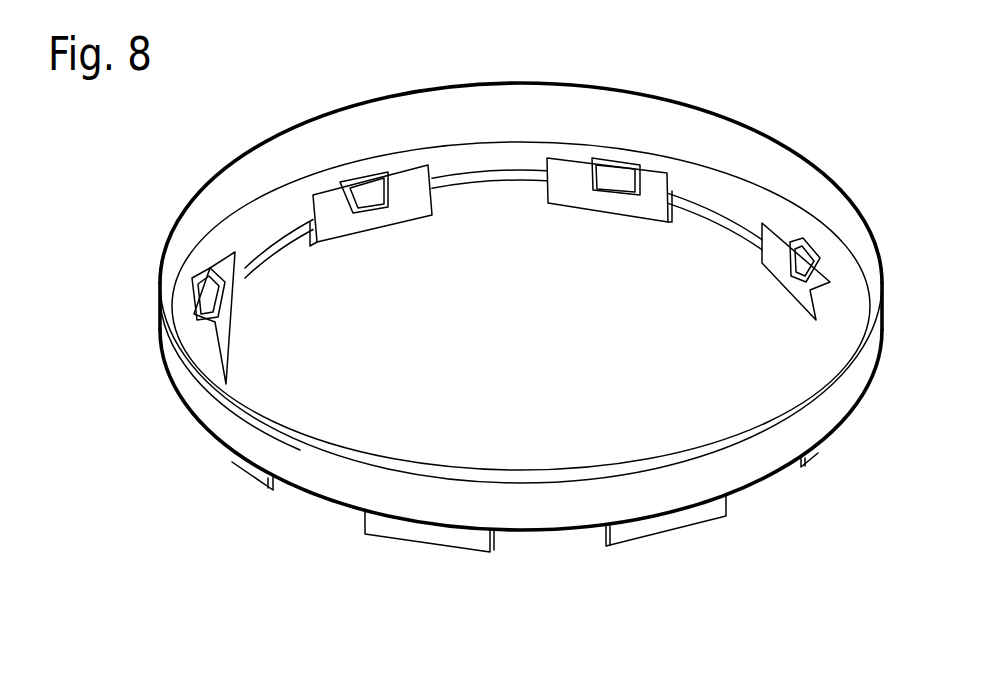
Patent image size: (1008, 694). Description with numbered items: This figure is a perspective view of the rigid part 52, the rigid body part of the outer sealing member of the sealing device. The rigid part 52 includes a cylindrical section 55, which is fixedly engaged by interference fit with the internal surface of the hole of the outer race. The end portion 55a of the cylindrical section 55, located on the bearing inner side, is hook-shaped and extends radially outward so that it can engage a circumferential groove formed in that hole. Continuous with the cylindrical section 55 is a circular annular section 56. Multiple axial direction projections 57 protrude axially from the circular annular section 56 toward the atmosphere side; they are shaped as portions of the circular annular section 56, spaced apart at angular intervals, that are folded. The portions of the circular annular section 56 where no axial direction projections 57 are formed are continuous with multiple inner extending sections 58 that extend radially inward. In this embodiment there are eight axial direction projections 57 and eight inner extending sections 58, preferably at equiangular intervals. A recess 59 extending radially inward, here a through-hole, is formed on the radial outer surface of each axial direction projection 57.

The rigid part 52 is at (164, 211).
The cylindrical section 55 is at (314, 130).
The end portion 55a is at (233, 404).
The circular annular section 56 is at (352, 170).
The axial direction projection 57 is at (398, 213).
The inner extending section 58 is at (277, 243).
The recess 59 is at (358, 199).